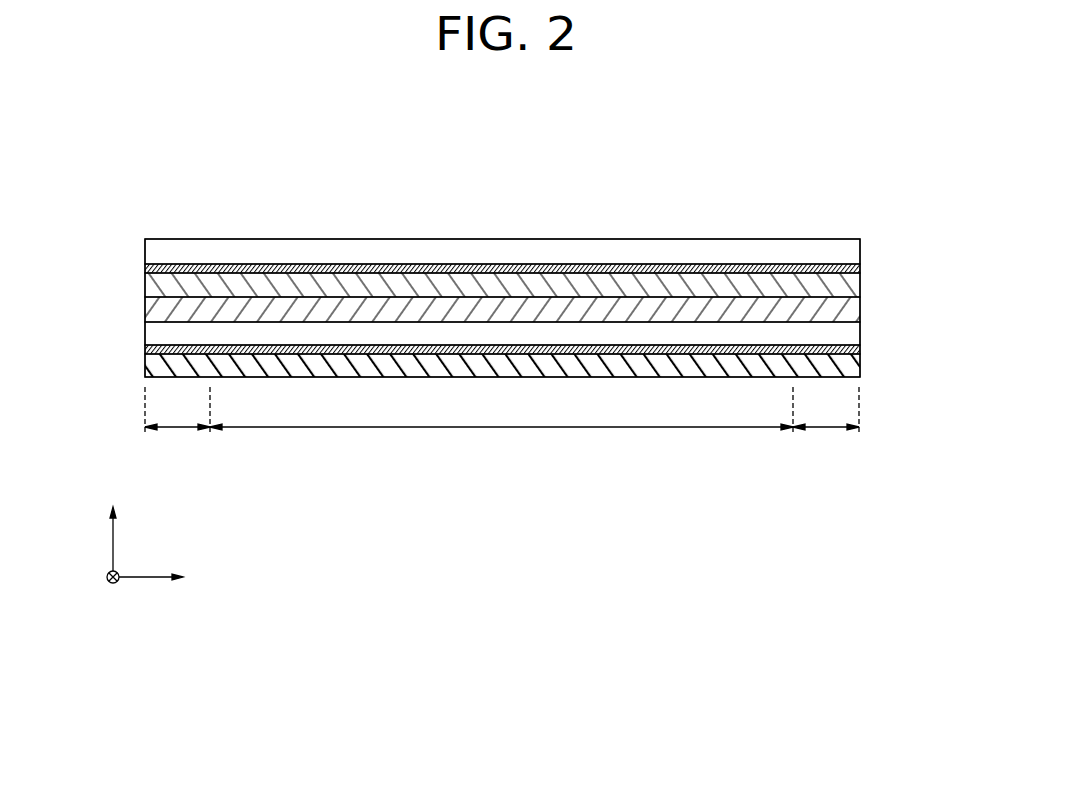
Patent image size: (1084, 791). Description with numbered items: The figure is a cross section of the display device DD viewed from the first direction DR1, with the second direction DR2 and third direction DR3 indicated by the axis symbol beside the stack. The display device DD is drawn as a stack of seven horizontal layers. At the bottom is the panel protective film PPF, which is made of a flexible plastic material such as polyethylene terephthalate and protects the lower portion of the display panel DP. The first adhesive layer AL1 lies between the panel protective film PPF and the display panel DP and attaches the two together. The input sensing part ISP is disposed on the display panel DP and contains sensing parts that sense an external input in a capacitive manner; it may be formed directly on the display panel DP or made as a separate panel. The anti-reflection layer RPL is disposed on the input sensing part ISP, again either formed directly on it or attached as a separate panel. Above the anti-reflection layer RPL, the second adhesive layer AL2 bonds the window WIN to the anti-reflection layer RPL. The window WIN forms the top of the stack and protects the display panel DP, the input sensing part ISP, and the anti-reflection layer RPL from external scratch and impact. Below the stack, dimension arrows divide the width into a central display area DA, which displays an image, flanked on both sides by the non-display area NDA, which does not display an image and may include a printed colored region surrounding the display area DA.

The display device DD is at (791, 195).
The window WIN is at (848, 253).
The second adhesive layer AL2 is at (155, 268).
The anti-reflection layer RPL is at (840, 282).
The input sensing part ISP is at (850, 310).
The display panel DP is at (848, 333).
The first adhesive layer AL1 is at (155, 349).
The panel protective film PPF is at (848, 363).
The non-display area NDA is at (502, 424).
The display area DA is at (501, 442).
The first direction DR1 is at (115, 591).
The second direction DR2 is at (173, 580).
The third direction DR3 is at (115, 527).